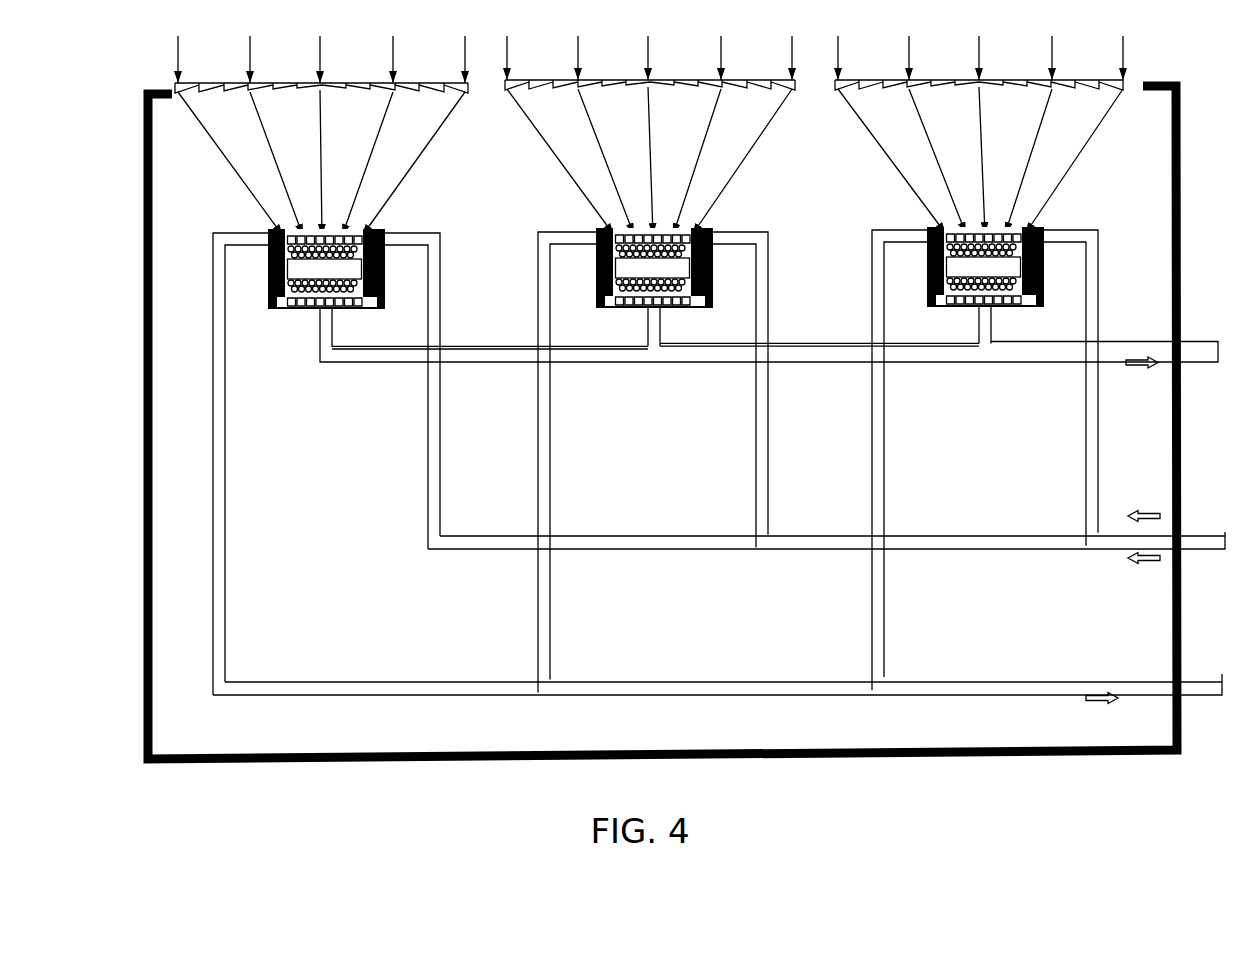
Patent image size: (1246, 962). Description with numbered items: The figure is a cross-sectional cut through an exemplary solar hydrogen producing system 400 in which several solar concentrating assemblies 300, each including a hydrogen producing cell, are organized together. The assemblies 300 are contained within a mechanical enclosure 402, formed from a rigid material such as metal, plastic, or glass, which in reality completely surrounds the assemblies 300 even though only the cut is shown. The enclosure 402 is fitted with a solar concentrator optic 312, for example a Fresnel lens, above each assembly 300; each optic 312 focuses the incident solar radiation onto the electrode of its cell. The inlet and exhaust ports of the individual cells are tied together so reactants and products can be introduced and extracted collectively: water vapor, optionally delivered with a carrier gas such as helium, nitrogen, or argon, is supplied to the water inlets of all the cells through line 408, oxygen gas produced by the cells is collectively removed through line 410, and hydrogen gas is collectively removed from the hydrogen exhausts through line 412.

The solar hydrogen producing system 400 is at (1183, 29).
The mechanical enclosure 402 is at (1181, 207).
The solar concentrator optic 312 is at (226, 94).
The solar concentrating assembly 300 is at (282, 313).
The line 412 is at (963, 358).
The line 408 is at (1000, 550).
The line 410 is at (958, 690).